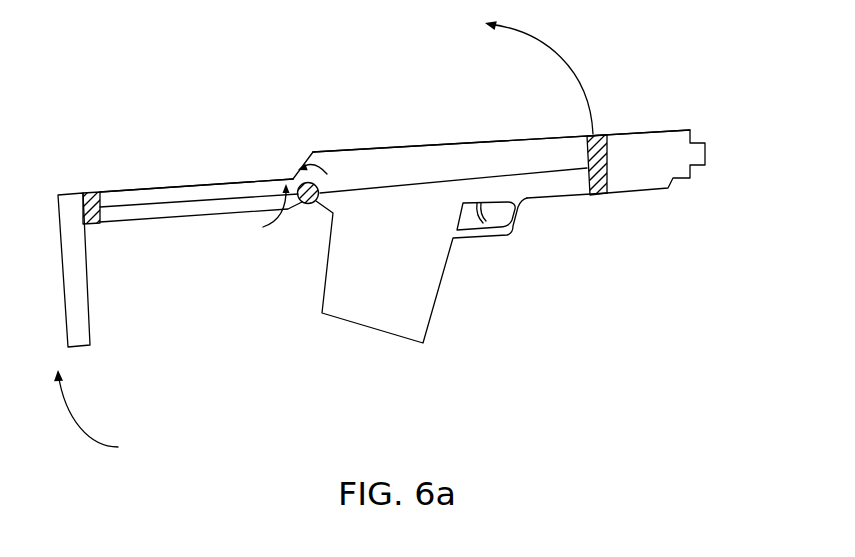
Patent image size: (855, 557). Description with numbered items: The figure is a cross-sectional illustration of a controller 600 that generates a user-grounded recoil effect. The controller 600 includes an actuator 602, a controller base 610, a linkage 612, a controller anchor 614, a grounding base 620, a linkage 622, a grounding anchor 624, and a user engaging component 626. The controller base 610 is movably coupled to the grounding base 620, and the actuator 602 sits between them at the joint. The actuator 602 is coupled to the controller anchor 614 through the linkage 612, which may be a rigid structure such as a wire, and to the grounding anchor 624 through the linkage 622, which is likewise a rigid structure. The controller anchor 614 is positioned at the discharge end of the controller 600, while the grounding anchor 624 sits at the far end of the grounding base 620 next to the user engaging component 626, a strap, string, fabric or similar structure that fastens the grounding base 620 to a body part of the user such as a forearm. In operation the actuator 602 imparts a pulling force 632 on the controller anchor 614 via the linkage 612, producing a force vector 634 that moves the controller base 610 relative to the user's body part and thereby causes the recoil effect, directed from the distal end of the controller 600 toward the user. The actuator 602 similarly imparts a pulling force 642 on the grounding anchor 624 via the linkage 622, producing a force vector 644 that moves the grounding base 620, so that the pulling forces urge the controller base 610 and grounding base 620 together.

The controller 600 is at (719, 94).
The actuator 602 is at (311, 204).
The controller base 610 is at (707, 363).
The linkage 612 is at (490, 174).
The controller anchor 614 is at (603, 155).
The grounding base 620 is at (278, 158).
The linkage 622 is at (172, 206).
The grounding anchor 624 is at (95, 218).
The user engaging component 626 is at (78, 313).
The pulling force 632 is at (318, 156).
The force vector 634 is at (577, 71).
The pulling force 642 is at (263, 227).
The force vector 644 is at (72, 415).